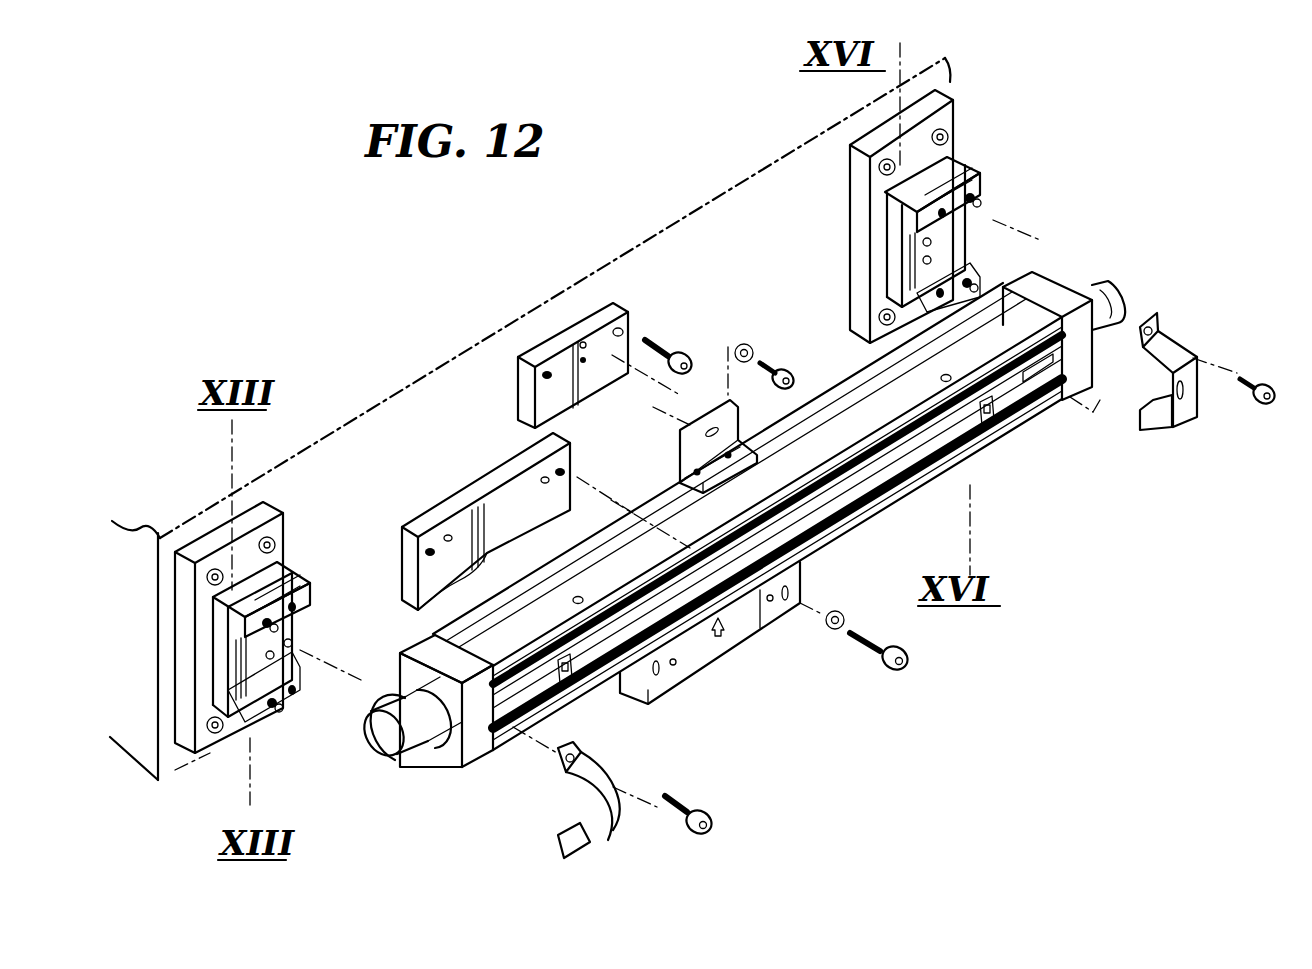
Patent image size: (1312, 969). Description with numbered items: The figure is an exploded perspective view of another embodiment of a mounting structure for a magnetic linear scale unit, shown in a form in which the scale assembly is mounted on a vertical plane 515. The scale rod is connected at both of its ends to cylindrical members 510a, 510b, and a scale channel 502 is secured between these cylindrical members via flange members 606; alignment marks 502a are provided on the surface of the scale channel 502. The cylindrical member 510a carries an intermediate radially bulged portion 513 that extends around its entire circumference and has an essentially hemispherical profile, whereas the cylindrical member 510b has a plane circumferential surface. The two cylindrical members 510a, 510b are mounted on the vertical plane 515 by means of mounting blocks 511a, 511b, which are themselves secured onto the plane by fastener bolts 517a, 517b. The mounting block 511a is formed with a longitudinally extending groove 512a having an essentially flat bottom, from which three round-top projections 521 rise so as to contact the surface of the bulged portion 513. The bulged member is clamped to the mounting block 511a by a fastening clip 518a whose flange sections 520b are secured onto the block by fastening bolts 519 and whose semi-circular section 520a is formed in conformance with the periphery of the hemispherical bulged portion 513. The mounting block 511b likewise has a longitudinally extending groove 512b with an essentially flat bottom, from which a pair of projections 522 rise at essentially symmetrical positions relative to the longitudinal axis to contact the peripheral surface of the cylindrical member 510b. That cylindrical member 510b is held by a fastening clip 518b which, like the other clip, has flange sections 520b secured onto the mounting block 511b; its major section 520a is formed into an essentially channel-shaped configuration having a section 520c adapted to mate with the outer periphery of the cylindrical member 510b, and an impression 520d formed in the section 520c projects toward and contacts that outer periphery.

The scale channel 502 is at (877, 502).
The alignment marks 502a is at (570, 684).
The cylindrical member 510a is at (403, 747).
The cylindrical member 510b is at (1113, 290).
The mounting block 511a is at (290, 634).
The mounting block 511b is at (937, 215).
The groove 512a is at (229, 736).
The groove 512b is at (960, 230).
The bulged portion 513 is at (432, 748).
The vertical plane 515 is at (395, 423).
The fastener bolts 517a is at (272, 706).
The fastener bolts 517b is at (980, 192).
The fastening clip 518a is at (589, 812).
The fastening clip 518b is at (1177, 382).
The fastening bolts 519 is at (699, 812).
The semi-circular section 520a is at (588, 838).
The flange sections 520b is at (560, 780).
The section 520c is at (1185, 412).
The impression 520d is at (1170, 397).
The round-top projections 521 is at (271, 658).
The projections 522 is at (922, 244).
The flange members 606 is at (427, 647).